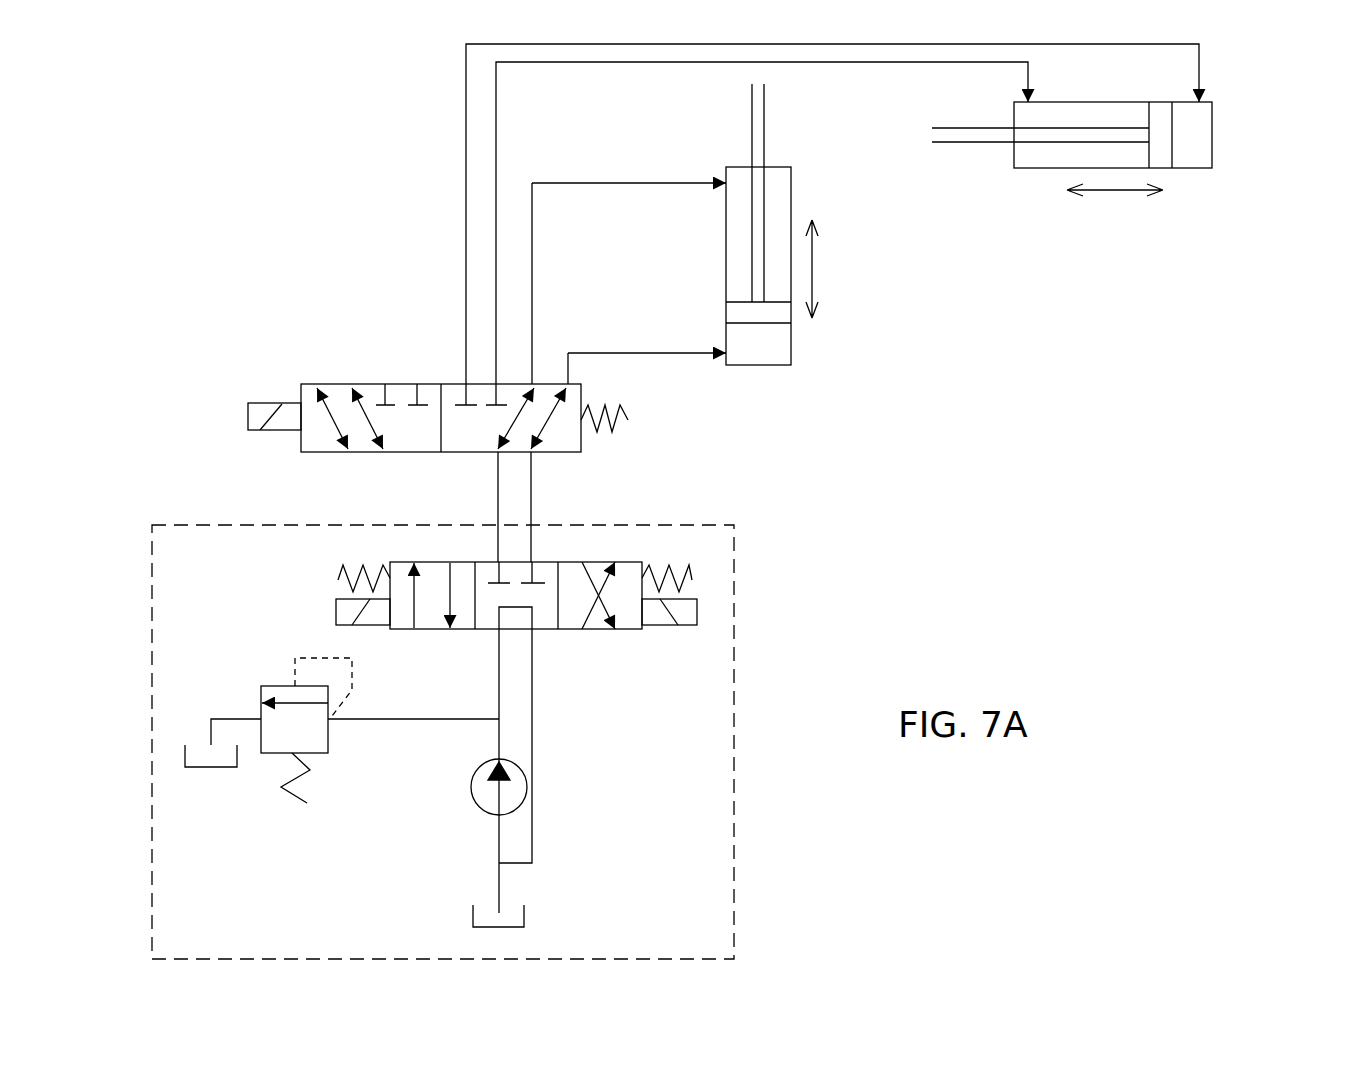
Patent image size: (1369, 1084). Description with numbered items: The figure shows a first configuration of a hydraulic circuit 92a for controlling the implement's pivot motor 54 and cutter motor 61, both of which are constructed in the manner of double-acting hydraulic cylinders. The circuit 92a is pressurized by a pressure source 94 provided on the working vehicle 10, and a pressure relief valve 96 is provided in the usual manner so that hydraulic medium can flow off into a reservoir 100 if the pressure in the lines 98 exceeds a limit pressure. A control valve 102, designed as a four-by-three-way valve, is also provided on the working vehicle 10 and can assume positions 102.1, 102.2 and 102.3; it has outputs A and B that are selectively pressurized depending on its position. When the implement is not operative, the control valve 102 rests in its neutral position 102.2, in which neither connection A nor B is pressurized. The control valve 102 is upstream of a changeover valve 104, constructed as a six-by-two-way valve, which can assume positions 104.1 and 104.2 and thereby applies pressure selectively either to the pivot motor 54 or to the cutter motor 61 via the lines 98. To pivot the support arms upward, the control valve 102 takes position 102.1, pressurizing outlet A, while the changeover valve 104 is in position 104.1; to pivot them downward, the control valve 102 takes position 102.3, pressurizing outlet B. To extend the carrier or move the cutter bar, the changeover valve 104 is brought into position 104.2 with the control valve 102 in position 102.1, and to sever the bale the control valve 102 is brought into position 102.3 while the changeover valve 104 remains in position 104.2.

The working vehicle 10 is at (733, 600).
The pivot motor 54 is at (672, 250).
The cutter motor 61 is at (1233, 94).
The hydraulic circuit 92a is at (1064, 528).
The pressure source 94 is at (472, 788).
The pressure relief valve 96 is at (267, 686).
The lines 98 is at (942, 62).
The reservoir 100 is at (193, 767).
The control valve 102 is at (516, 653).
The position of control valve 102.1 is at (415, 629).
The neutral position of control valve 102.2 is at (515, 562).
The position of control valve 102.3 is at (630, 629).
The changeover valve 104 is at (439, 395).
The position of changeover valve 104.1 is at (575, 452).
The position of changeover valve 104.2 is at (307, 384).